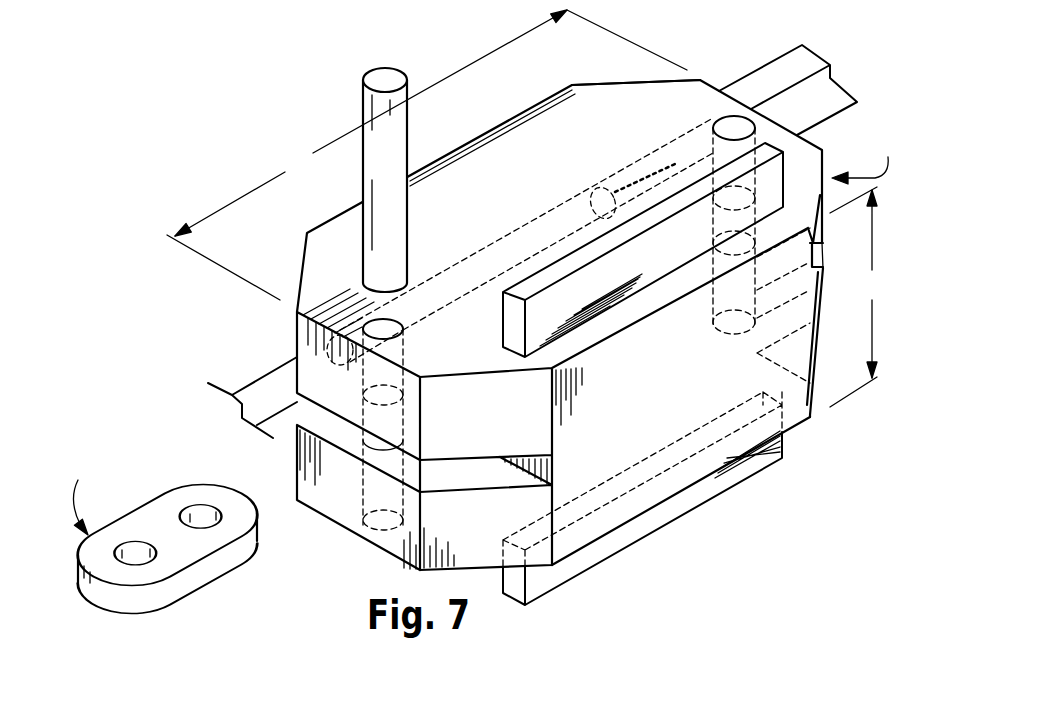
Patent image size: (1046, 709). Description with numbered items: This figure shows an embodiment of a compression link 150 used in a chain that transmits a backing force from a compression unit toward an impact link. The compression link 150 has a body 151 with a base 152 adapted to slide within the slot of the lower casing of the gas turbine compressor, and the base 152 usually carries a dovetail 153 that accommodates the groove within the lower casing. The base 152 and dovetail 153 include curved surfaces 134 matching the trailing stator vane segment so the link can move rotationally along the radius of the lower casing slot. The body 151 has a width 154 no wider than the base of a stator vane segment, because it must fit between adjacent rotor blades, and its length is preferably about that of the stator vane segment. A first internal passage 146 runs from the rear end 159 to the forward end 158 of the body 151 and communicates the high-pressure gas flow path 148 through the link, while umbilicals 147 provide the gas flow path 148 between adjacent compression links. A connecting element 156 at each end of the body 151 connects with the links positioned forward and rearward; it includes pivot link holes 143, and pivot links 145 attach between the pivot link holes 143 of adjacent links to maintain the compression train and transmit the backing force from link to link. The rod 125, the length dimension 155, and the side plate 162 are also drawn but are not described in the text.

The rod 125 is at (363, 100).
The curved surfaces 134 is at (620, 337).
The pivot link holes 143 is at (740, 128).
The pivot link 145 is at (150, 500).
The first internal passage 146 is at (430, 278).
The umbilical 147 is at (250, 390).
The high-pressure gas flow path 148 is at (628, 162).
The compression link 150 is at (173, 198).
The body 151 is at (452, 145).
The base 152 is at (683, 410).
The dovetail 153 is at (553, 297).
The width 154 is at (886, 286).
The length dimension L 155 is at (290, 162).
The connecting element 156 is at (487, 333).
The forward end 158 is at (497, 418).
The rear end 159 is at (627, 82).
The side plate 162 is at (824, 350).